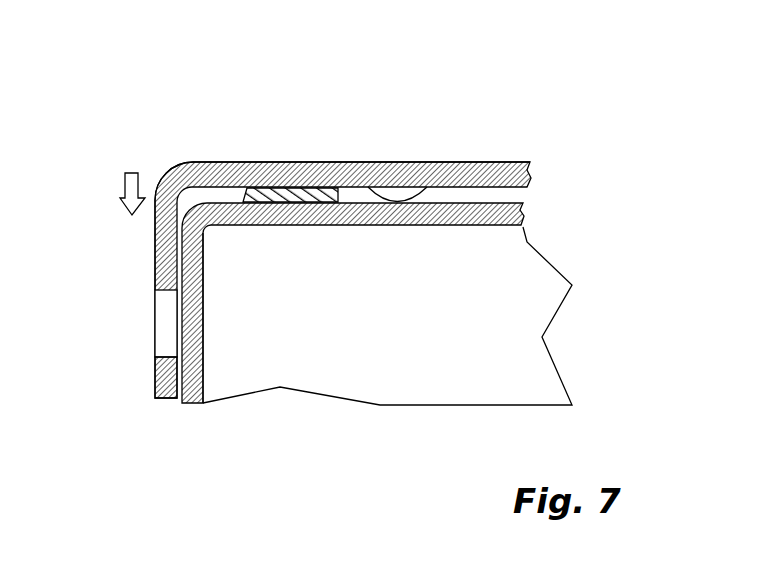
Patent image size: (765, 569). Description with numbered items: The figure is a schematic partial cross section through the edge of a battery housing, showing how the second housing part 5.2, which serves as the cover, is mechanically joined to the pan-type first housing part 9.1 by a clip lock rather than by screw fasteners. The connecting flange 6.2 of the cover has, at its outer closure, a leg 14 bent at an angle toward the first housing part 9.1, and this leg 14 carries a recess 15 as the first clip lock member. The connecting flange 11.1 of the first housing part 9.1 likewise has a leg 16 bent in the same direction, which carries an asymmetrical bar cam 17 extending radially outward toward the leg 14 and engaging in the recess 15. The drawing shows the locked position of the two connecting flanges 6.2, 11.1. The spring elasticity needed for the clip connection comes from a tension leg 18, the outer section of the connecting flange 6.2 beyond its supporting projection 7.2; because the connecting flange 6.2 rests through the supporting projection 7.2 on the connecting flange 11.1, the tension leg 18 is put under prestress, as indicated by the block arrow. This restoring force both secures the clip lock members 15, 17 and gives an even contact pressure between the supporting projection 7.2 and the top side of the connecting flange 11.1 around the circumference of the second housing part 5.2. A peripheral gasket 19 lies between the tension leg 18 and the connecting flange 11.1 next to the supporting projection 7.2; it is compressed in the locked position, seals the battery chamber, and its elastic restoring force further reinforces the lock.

The second housing part 5.2 is at (456, 155).
The connecting flange 6.2 is at (392, 161).
The tension leg 18 is at (355, 145).
The leg 14 is at (154, 268).
The recess 15 is at (154, 302).
The bar cam 17 is at (179, 306).
The connecting flange 11.1 is at (379, 227).
The leg 16 is at (206, 324).
The gasket 19 is at (315, 196).
The supporting projection 7.2 is at (425, 192).
The first housing part 9.1 is at (504, 337).